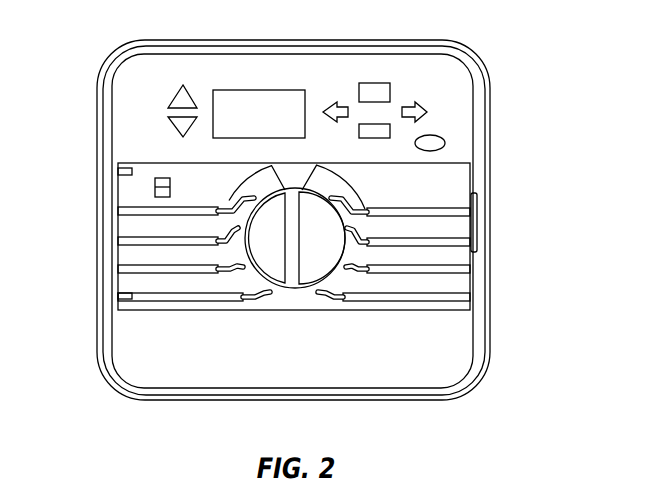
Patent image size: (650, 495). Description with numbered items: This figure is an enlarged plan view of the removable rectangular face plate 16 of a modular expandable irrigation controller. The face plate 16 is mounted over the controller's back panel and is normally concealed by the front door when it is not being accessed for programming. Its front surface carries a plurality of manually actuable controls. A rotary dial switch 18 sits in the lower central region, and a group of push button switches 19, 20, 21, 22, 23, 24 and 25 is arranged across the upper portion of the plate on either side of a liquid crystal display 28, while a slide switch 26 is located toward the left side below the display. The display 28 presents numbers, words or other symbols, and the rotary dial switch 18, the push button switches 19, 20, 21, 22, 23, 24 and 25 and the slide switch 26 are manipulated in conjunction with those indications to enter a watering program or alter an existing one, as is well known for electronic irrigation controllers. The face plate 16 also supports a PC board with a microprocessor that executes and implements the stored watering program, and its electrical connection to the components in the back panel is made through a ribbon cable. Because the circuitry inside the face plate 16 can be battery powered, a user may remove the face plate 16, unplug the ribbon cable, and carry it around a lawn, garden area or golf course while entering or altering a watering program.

The removable rectangular face plate 16 is at (463, 107).
The rotary dial switch 18 is at (292, 265).
The push button switch 19 is at (333, 106).
The push button switch 20 is at (426, 110).
The push button switch 21 is at (168, 107).
The push button switch 22 is at (168, 122).
The push button switch 23 is at (372, 83).
The push button switch 24 is at (359, 131).
The push button switch 25 is at (445, 142).
The slide switch 26 is at (155, 188).
The liquid crystal display 28 is at (233, 98).